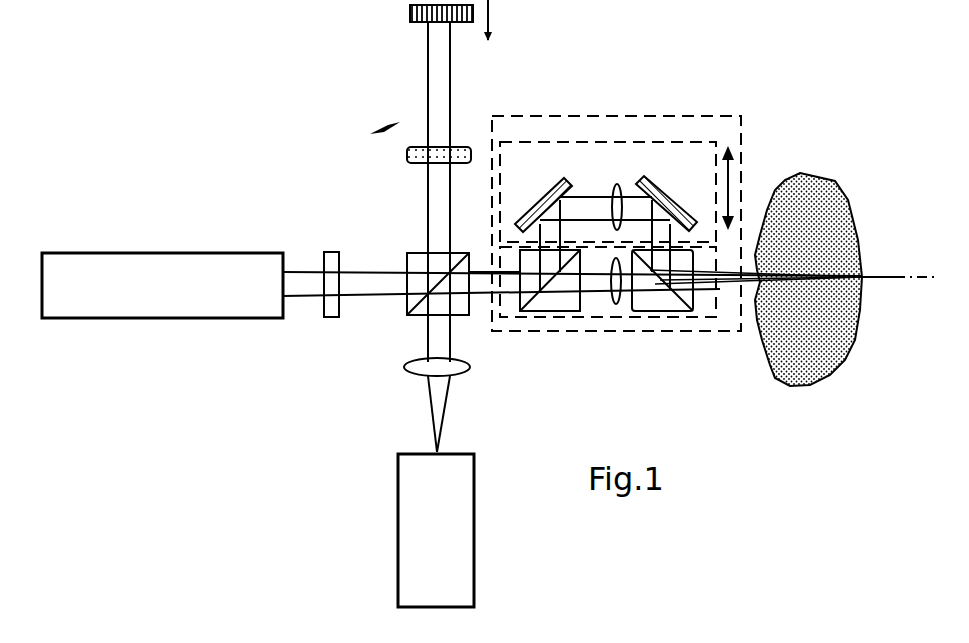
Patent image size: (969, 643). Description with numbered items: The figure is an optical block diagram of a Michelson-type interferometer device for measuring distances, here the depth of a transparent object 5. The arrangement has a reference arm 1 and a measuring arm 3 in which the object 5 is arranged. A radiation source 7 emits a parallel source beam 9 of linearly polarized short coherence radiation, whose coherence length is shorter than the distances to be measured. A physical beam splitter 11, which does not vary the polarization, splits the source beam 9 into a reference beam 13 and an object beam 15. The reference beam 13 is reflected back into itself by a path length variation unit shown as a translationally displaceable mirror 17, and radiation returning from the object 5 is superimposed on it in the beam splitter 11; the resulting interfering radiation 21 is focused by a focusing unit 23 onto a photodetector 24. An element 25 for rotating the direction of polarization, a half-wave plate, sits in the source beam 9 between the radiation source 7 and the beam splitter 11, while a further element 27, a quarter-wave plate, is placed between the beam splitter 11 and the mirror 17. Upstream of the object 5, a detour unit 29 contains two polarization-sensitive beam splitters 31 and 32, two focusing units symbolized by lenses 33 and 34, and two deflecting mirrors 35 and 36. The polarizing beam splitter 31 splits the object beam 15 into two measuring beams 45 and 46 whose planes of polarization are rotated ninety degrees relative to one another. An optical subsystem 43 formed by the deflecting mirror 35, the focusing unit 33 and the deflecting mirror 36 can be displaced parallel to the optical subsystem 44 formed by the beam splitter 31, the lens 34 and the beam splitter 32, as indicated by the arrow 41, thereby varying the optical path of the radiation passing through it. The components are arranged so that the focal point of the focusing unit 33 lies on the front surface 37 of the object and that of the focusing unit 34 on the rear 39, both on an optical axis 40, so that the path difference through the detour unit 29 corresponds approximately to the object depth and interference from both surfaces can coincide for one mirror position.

The reference arm 1 is at (377, 129).
The measuring arm 3 is at (630, 375).
The object 5 is at (845, 352).
The radiation source 7 is at (165, 300).
The source beam 9 is at (367, 292).
The beam splitter 11 is at (409, 312).
The reference beam 13 is at (430, 193).
The object beam 15 is at (478, 280).
The mirror 17 is at (410, 14).
The interfering radiation 21 is at (456, 388).
The focusing unit 23 is at (406, 364).
The photodetector 24 is at (455, 519).
The element for rotating the direction of polarization 25 is at (331, 252).
The further element for rotating the direction of polarization 27 is at (408, 156).
The detour unit 29 is at (629, 114).
The polarization-sensitive beam splitter 31 is at (553, 305).
The polarization-sensitive beam splitter 32 is at (663, 300).
The focusing unit 33 is at (614, 188).
The focusing unit 34 is at (617, 305).
The deflecting mirror 35 is at (538, 199).
The deflecting mirror 36 is at (662, 188).
The front surface 37 is at (763, 282).
The rear of the object 39 is at (863, 276).
The optical axis 40 is at (889, 284).
The arrow 41 is at (736, 186).
The optical subsystem 43 is at (634, 143).
The optical subsystem 44 is at (501, 320).
The measuring beam 45 is at (582, 200).
The measuring beam 46 is at (593, 283).